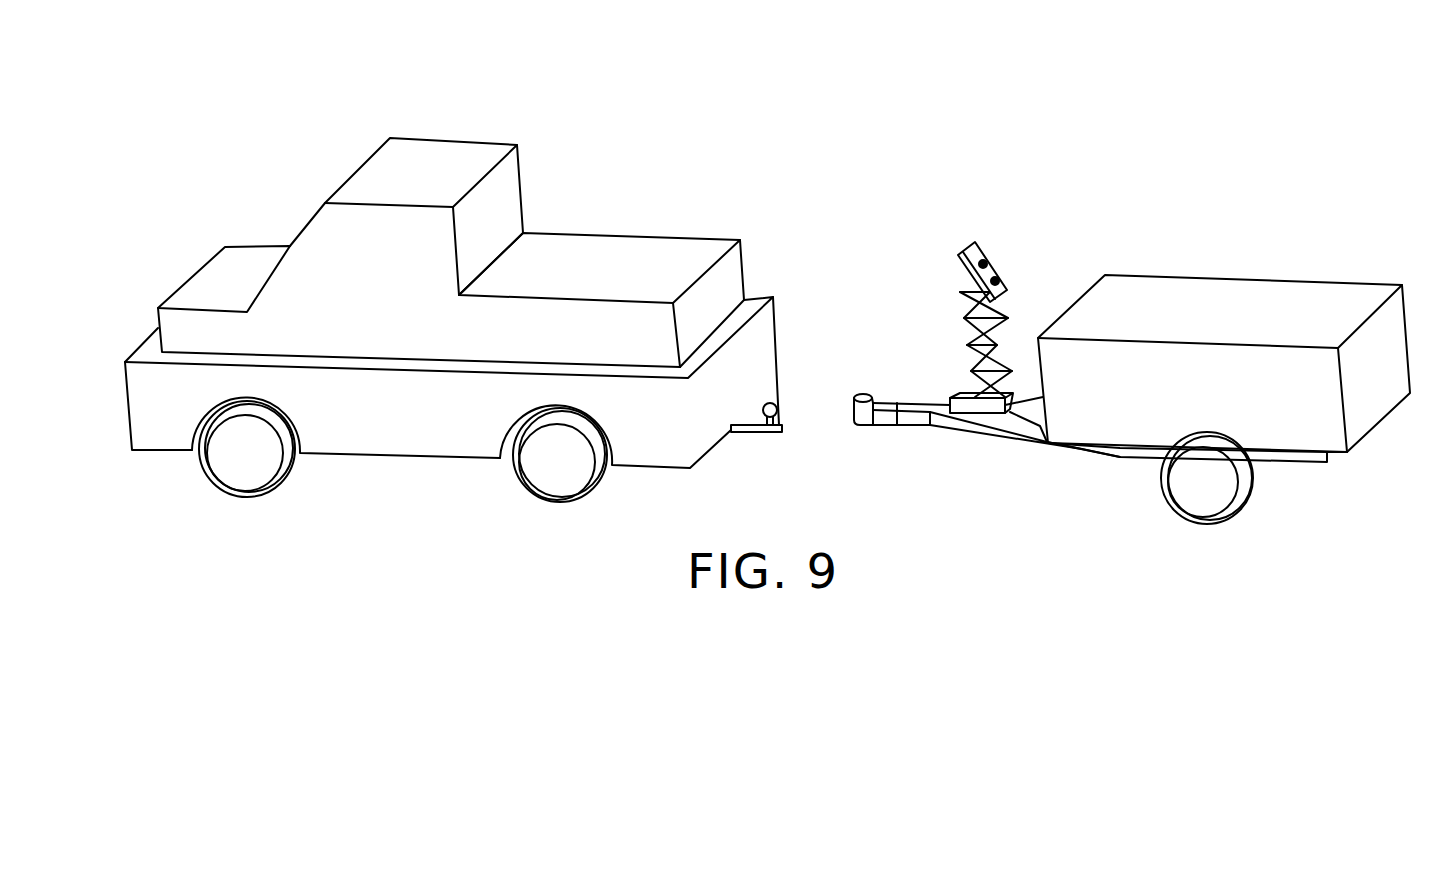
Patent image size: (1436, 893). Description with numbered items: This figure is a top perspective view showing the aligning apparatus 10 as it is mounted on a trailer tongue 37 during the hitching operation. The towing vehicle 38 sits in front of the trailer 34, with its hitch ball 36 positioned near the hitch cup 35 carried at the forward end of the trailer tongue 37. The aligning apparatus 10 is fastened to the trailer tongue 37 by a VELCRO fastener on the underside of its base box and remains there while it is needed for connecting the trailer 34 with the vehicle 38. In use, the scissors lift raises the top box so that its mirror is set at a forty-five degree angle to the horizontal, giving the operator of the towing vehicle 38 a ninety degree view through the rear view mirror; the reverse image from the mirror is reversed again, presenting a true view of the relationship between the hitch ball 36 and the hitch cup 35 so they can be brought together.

The aligning apparatus 10 is at (1000, 245).
The trailer 34 is at (1220, 260).
The hitch cup 35 is at (860, 398).
The hitch ball 36 is at (778, 392).
The trailer tongue 37 is at (975, 428).
The towing vehicle 38 is at (502, 123).